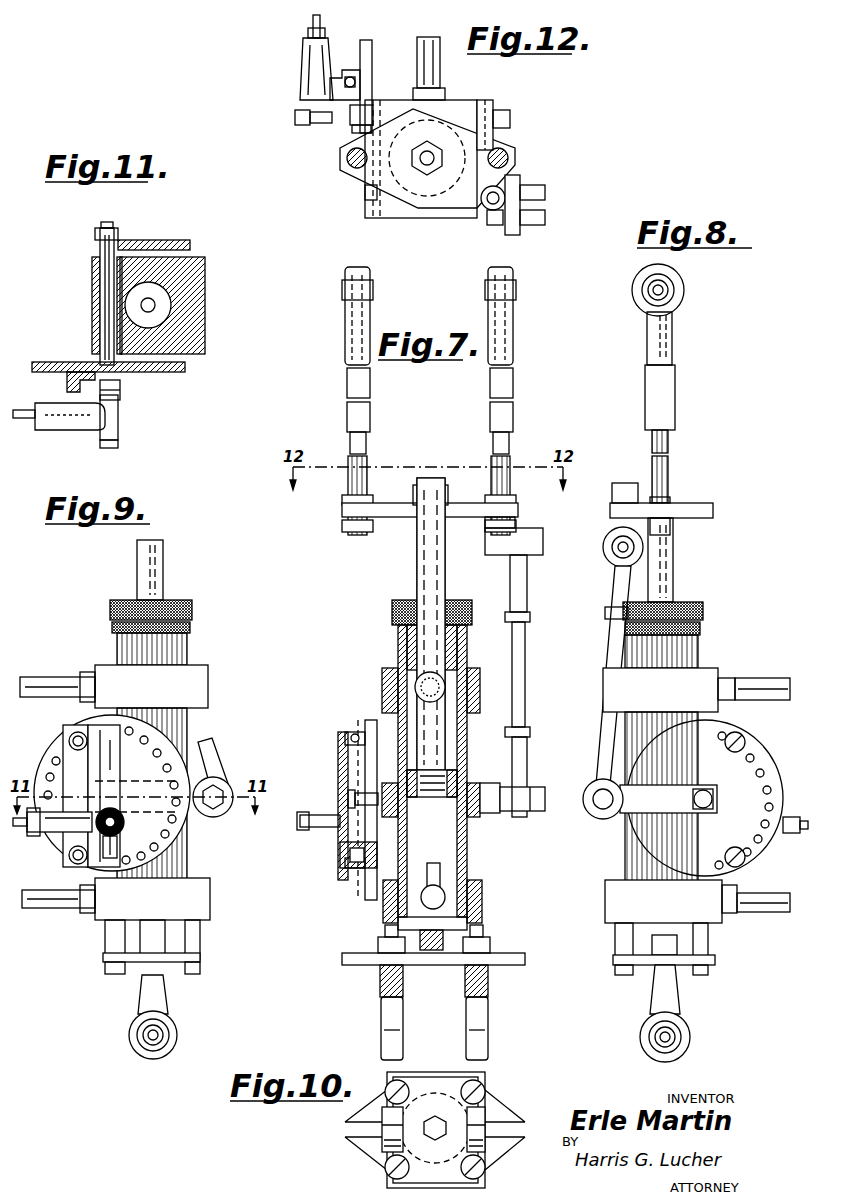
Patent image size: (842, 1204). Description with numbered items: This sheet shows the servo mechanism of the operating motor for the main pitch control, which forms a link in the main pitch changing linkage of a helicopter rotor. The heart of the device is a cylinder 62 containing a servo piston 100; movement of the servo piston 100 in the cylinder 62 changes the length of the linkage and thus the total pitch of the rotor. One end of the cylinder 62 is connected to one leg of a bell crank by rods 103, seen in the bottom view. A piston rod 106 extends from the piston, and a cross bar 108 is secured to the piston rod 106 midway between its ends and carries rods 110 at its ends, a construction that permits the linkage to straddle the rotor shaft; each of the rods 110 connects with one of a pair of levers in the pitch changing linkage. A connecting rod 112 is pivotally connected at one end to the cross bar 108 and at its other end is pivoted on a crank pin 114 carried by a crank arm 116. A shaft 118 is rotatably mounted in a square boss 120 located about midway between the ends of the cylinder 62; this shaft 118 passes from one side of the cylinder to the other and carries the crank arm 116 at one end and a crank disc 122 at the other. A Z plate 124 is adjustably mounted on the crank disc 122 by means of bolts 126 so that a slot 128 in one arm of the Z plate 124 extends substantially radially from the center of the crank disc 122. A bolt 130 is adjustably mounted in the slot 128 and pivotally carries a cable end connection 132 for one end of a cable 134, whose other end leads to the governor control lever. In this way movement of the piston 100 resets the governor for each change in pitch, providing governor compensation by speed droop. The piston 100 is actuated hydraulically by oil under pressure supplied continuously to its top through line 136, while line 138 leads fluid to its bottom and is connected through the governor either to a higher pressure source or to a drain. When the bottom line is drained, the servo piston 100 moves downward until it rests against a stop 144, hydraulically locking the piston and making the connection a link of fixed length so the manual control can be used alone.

In FIG. 9, the cylinder 62 is at (152, 794).
In FIG. 7, the cylinder 62 is at (467, 857).
In FIG. 8, the cylinder 62 is at (642, 850).
In FIG. 7, the servo piston 100 is at (450, 770).
In FIG. 9, the rods 103 is at (165, 1005).
In FIG. 8, the rods 103 is at (678, 1002).
In FIG. 9, the piston rod 106 is at (163, 570).
In FIG. 7, the piston rod 106 is at (417, 578).
In FIG. 8, the piston rod 106 is at (673, 562).
In FIG. 12, the cross bar 108 is at (455, 118).
In FIG. 7, the cross bar 108 is at (393, 503).
In FIG. 8, the cross bar 108 is at (700, 503).
In FIG. 8, the rods 110 is at (672, 345).
In FIG. 7, the connecting rod 112 is at (527, 690).
In FIG. 8, the connecting rod 112 is at (612, 646).
In FIG. 9, the crank pin 114 is at (216, 775).
In FIG. 7, the crank pin 114 is at (540, 787).
In FIG. 8, the crank pin 114 is at (600, 812).
In FIG. 12, the crank arm 116 is at (492, 110).
In FIG. 11, the crank arm 116 is at (165, 240).
In FIG. 9, the crank arm 116 is at (228, 790).
In FIG. 7, the crank arm 116 is at (492, 783).
In FIG. 11, the shaft 118 is at (97, 250).
In FIG. 11, the square boss 120 is at (200, 268).
In FIG. 7, the square boss 120 is at (480, 816).
In FIG. 12, the crank disc 122 is at (372, 62).
In FIG. 11, the crank disc 122 is at (186, 366).
In FIG. 9, the crank disc 122 is at (170, 840).
In FIG. 7, the crank disc 122 is at (371, 880).
In FIG. 8, the crank disc 122 is at (768, 855).
In FIG. 12, the Z plate 124 is at (350, 68).
In FIG. 11, the Z plate 124 is at (67, 380).
In FIG. 9, the Z plate 124 is at (63, 762).
In FIG. 7, the Z plate 124 is at (338, 760).
In FIG. 12, the bolts 126 is at (348, 76).
In FIG. 11, the slot 128 is at (121, 392).
In FIG. 9, the slot 128 is at (112, 848).
In FIG. 7, the slot 128 is at (348, 798).
In FIG. 12, the bolt 130 is at (295, 118).
In FIG. 7, the bolt 130 is at (300, 822).
In FIG. 12, the cable end connection 132 is at (305, 55).
In FIG. 11, the cable end connection 132 is at (70, 430).
In FIG. 9, the cable end connection 132 is at (50, 826).
In FIG. 7, the cable end connection 132 is at (340, 852).
In FIG. 12, the cable 134 is at (310, 22).
In FIG. 9, the cable 134 is at (20, 828).
In FIG. 8, the cable 134 is at (790, 833).
In FIG. 12, the line 136 is at (440, 76).
In FIG. 9, the line 136 is at (45, 677).
In FIG. 8, the line 136 is at (752, 678).
In FIG. 9, the line 138 is at (52, 908).
In FIG. 8, the line 138 is at (770, 912).
In FIG. 11, the stop 144 is at (158, 305).
In FIG. 7, the stop 144 is at (440, 876).